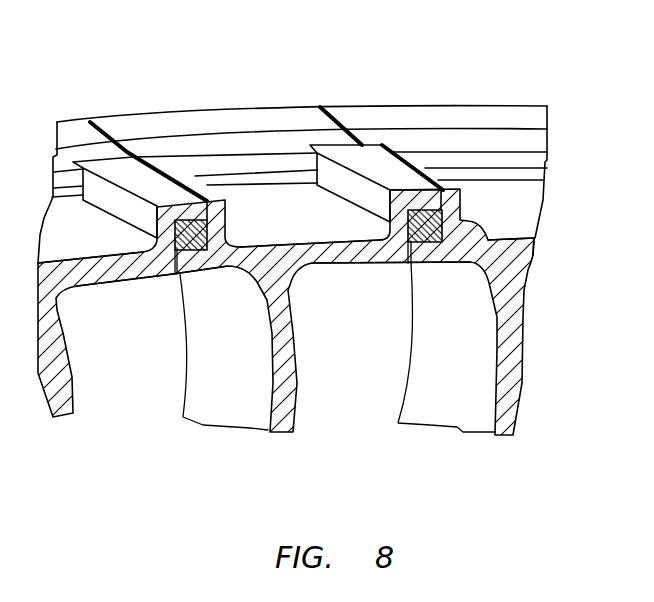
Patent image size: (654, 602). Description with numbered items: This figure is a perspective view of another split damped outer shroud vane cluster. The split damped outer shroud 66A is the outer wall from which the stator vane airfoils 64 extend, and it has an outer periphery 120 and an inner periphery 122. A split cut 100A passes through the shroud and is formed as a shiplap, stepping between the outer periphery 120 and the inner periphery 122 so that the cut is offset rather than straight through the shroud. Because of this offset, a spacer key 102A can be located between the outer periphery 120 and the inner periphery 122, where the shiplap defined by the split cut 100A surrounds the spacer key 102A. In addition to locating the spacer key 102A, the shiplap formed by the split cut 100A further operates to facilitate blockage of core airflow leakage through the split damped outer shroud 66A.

The stator vane airfoil 64 is at (558, 374).
The split damped outer shroud 66A is at (553, 205).
The split cut 100A is at (107, 127).
The spacer key 102A is at (531, 261).
The outer periphery 120 is at (397, 183).
The inner periphery 122 is at (332, 267).